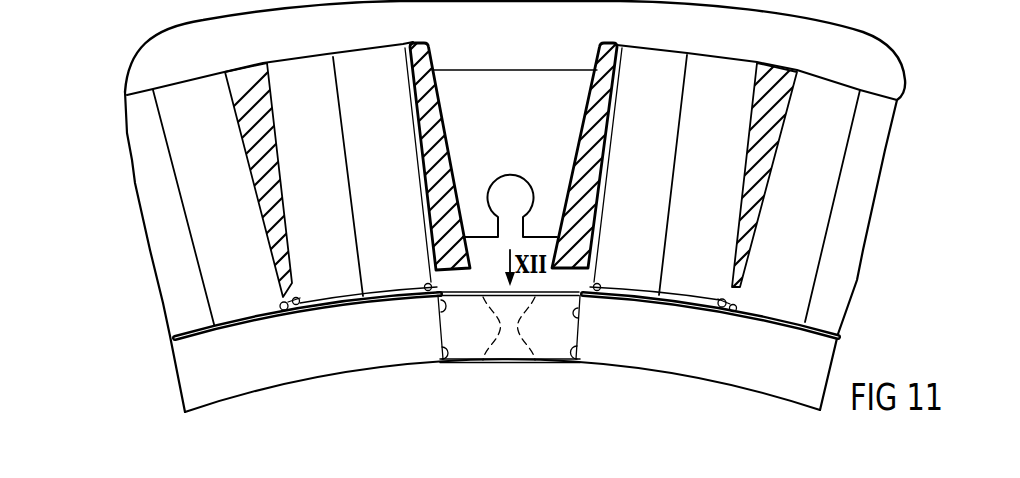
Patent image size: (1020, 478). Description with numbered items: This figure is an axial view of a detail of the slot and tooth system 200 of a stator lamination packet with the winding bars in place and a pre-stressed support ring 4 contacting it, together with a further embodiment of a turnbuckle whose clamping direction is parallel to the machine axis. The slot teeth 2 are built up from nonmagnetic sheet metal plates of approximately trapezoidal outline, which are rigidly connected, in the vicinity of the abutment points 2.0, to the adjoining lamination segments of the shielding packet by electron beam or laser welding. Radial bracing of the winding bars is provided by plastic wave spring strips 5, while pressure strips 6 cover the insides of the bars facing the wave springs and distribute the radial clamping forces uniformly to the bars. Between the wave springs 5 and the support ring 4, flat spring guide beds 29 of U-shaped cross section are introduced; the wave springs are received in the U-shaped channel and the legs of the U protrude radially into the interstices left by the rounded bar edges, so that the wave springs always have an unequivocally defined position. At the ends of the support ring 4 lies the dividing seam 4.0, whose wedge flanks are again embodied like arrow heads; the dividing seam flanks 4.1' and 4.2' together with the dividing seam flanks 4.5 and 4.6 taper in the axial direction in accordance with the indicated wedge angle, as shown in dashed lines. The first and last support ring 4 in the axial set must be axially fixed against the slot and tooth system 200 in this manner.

The abutment points 2.0 is at (512, 69).
The slot teeth 2 is at (523, 135).
The slot and tooth system 200 is at (633, 48).
The wave spring strips 5 is at (329, 298).
The pressure strips 6 is at (384, 287).
The spring guide beds 29 is at (301, 308).
The support ring 4 is at (329, 442).
The dividing seam 4.0 is at (513, 376).
The dividing seam flank 4.5 is at (447, 310).
The dividing seam flank 4.6 is at (573, 318).
The dividing seam flank 4.1' is at (433, 383).
The dividing seam flank 4.2' is at (593, 385).